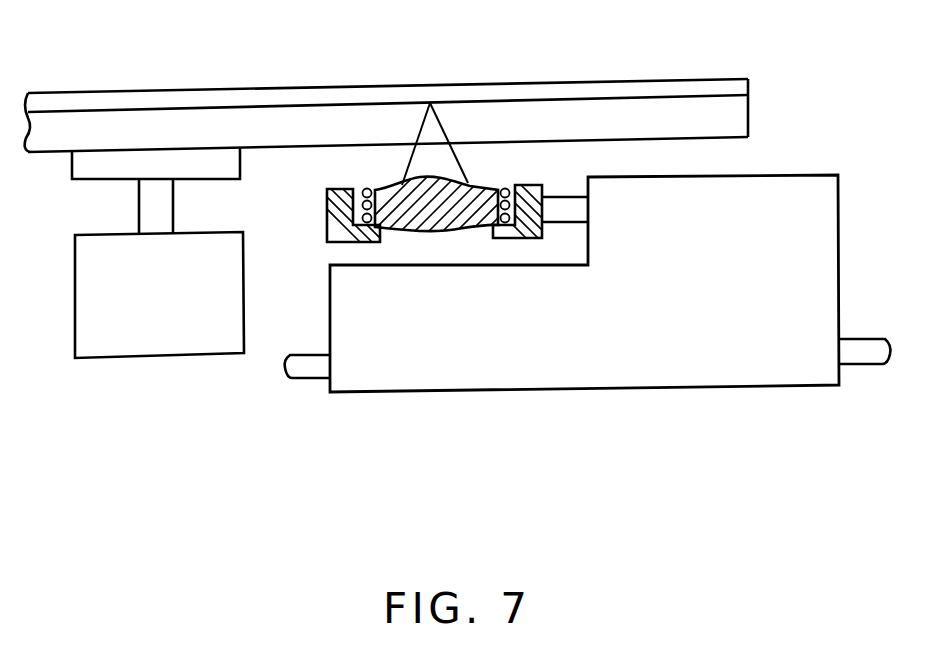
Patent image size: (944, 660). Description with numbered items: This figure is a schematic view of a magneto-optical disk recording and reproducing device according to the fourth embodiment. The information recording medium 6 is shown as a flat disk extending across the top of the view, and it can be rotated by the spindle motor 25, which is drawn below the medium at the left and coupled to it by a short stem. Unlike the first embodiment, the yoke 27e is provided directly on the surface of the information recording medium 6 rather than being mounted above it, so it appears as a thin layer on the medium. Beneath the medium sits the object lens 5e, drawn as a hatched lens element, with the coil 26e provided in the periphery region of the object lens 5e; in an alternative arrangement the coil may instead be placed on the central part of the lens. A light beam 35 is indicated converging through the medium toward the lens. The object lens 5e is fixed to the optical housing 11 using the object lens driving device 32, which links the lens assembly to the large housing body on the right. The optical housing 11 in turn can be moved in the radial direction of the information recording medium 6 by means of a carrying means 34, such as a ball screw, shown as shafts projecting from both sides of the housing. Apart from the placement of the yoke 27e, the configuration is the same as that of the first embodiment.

The information recording medium 6 is at (151, 121).
The yoke 27e is at (650, 88).
The spindle motor 25 is at (158, 348).
The light beam 35 is at (418, 128).
The object lens 5e is at (477, 192).
The coil 26e is at (368, 192).
The object lens driving device 32 is at (562, 203).
The optical housing 11 is at (770, 195).
The carrying means 34 is at (307, 372).